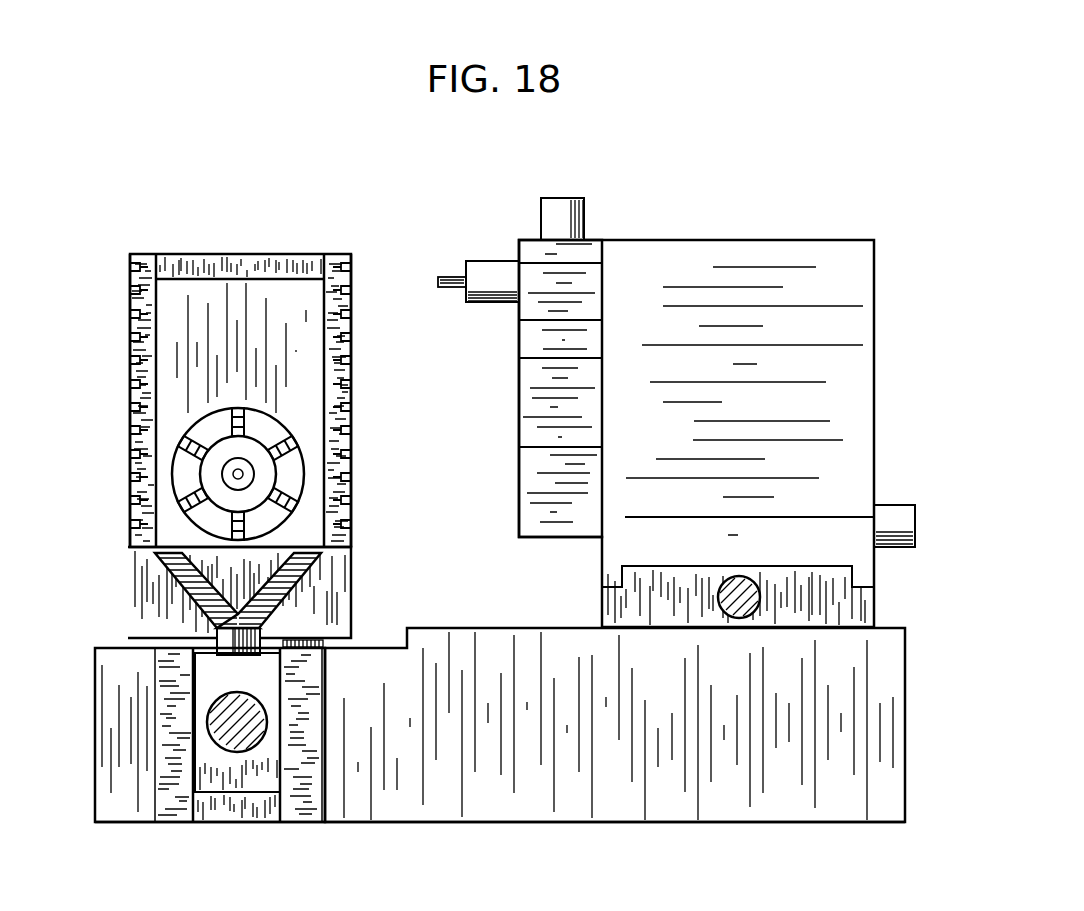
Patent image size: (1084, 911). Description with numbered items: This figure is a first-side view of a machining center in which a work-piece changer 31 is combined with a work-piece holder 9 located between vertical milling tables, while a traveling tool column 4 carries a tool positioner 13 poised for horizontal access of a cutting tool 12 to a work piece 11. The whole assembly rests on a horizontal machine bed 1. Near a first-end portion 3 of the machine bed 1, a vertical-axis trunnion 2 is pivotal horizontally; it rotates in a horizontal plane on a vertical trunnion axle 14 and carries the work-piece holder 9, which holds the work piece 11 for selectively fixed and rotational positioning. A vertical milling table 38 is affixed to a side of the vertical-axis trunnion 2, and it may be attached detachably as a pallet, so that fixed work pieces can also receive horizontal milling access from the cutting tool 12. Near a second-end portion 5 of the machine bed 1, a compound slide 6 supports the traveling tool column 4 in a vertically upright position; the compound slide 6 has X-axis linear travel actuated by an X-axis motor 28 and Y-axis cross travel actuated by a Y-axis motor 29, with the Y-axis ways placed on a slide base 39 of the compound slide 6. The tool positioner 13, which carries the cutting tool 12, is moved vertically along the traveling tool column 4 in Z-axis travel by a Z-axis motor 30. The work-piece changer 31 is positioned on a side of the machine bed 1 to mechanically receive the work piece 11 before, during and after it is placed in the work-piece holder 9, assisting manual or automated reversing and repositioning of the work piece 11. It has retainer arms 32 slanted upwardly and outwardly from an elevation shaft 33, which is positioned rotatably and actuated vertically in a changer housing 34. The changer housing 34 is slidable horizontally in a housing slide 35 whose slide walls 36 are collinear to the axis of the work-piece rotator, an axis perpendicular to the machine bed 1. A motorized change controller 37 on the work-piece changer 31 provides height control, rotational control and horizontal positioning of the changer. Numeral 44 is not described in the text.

The horizontal machine bed 1 is at (350, 823).
The vertical-axis trunnion 2 is at (375, 538).
The first-end portion 3 is at (95, 783).
The traveling tool column 4 is at (548, 410).
The second-end portion 5 is at (905, 716).
The compound slide 6 is at (906, 223).
The work-piece holder 9 is at (192, 443).
The work piece 11 is at (200, 470).
The cutting tool 12 is at (440, 280).
The tool positioner 13 is at (466, 262).
The vertical trunnion axle 14 is at (283, 645).
The X-axis motor 28 is at (740, 590).
The Y-axis motor 29 is at (915, 505).
The Z-axis motor 30 is at (584, 200).
The work-piece changer 31 is at (236, 832).
The retainer arms 32 is at (190, 585).
The elevation shaft 33 is at (232, 638).
The changer housing 34 is at (213, 675).
The housing slide 35 is at (263, 805).
The slide walls 36 is at (307, 750).
The motorized change controller 37 is at (237, 722).
The vertical milling table 38 is at (130, 343).
The slide base 39 is at (803, 592).
The right wall 44 is at (340, 367).